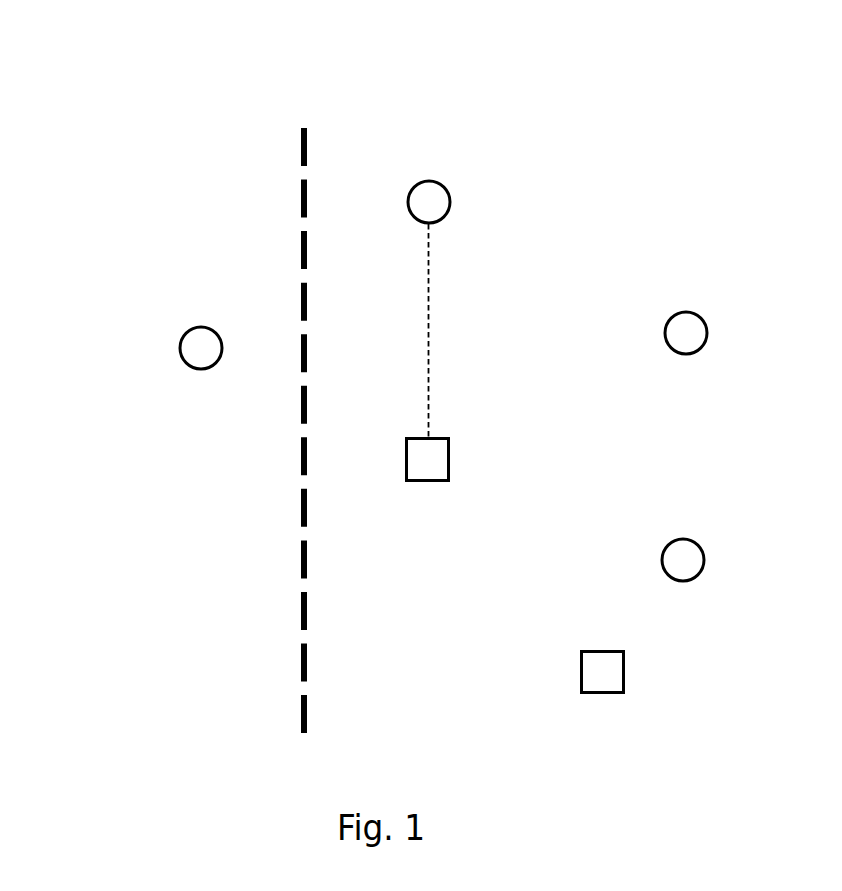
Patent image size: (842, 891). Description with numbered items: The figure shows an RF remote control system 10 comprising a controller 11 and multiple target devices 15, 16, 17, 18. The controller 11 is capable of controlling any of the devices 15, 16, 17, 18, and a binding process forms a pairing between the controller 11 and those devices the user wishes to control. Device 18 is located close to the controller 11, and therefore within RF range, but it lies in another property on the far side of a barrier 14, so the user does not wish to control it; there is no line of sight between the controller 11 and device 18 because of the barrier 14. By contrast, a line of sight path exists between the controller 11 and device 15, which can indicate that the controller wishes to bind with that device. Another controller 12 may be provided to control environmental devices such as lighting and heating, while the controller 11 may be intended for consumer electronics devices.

The RF remote control system 10 is at (123, 107).
The controller 11 is at (419, 436).
The another controller 12 is at (592, 650).
The barrier 14 is at (302, 134).
The target device 15 is at (420, 182).
The target device 16 is at (673, 316).
The target device 17 is at (670, 540).
The target device 18 is at (183, 333).